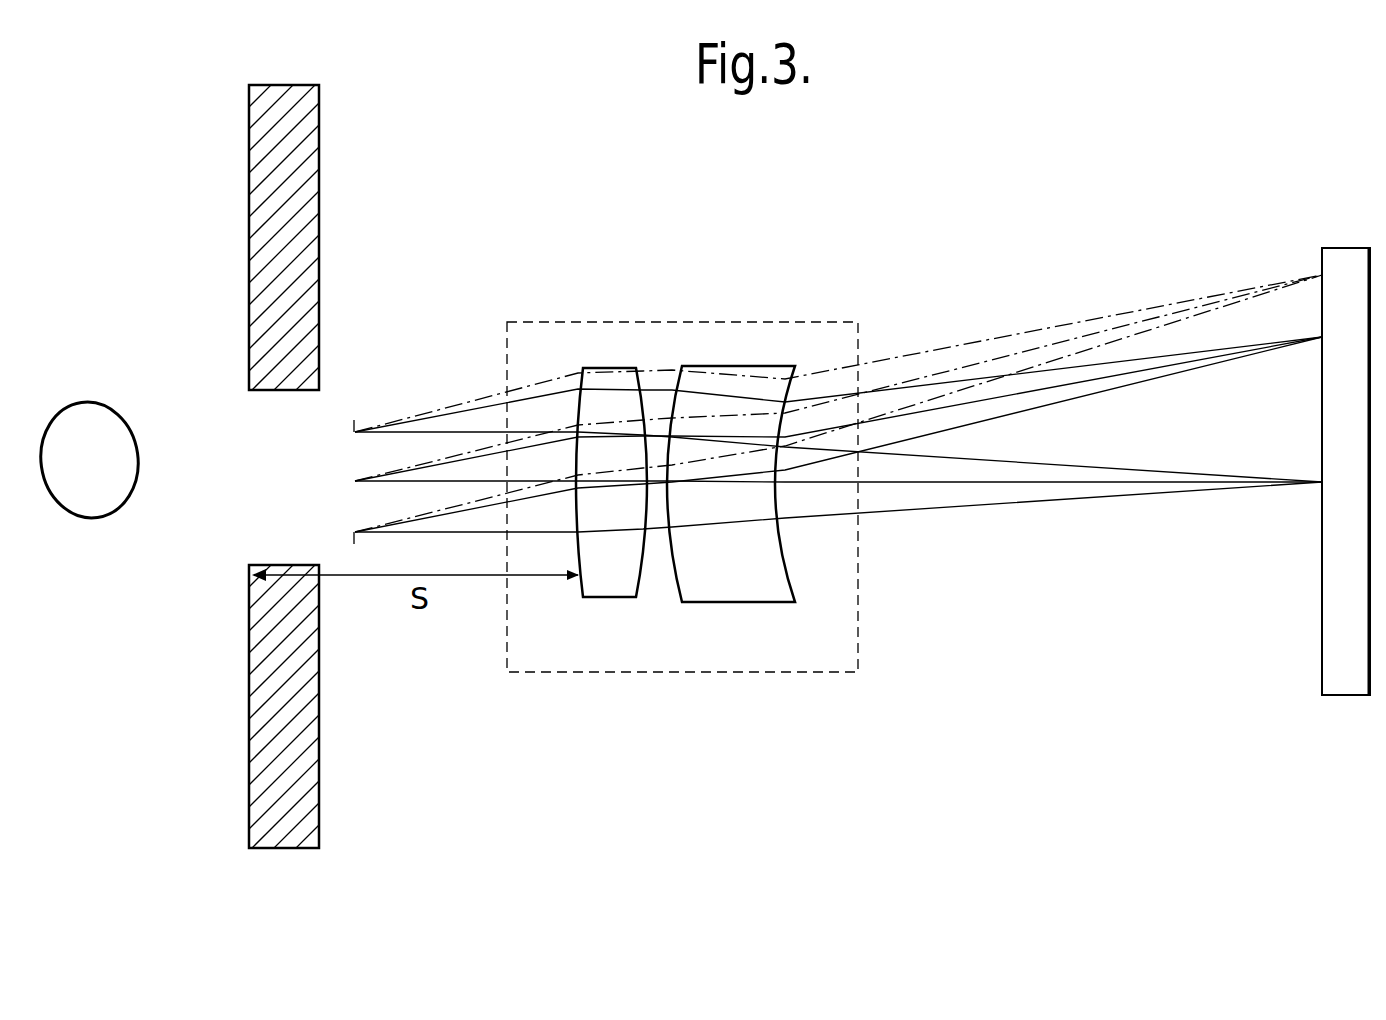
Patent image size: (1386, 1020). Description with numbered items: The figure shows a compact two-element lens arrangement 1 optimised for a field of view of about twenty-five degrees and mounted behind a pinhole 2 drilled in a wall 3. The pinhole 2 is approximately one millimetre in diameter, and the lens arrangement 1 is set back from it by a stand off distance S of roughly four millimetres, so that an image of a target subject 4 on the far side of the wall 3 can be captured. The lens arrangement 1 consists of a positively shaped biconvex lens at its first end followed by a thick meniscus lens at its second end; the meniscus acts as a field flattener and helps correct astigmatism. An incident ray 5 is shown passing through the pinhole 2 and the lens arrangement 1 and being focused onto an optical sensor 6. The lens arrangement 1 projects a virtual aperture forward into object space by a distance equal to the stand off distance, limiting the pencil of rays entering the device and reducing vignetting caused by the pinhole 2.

The lens arrangement 1 is at (662, 320).
The pinhole 2 is at (289, 492).
The wall 3 is at (248, 130).
The target subject 4 is at (78, 402).
The incident ray 5 is at (1145, 496).
The optical sensor 6 is at (1350, 248).